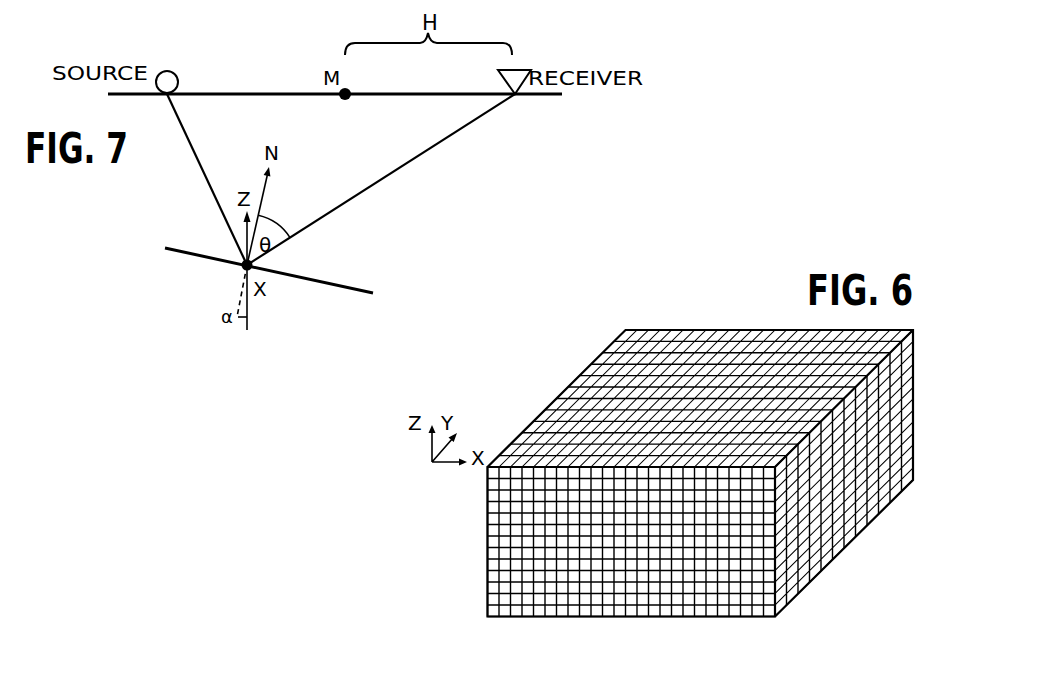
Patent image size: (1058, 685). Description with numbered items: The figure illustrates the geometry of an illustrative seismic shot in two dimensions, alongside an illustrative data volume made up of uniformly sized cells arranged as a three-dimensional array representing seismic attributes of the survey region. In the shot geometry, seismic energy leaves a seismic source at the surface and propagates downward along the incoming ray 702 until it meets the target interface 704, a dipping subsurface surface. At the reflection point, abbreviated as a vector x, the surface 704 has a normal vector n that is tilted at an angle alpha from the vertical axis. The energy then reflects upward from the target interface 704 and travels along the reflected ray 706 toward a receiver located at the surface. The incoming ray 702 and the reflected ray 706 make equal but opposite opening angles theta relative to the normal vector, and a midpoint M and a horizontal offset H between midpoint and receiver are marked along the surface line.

The ray 702 is at (192, 137).
The target interface 704 is at (333, 282).
The reflected ray 706 is at (443, 140).